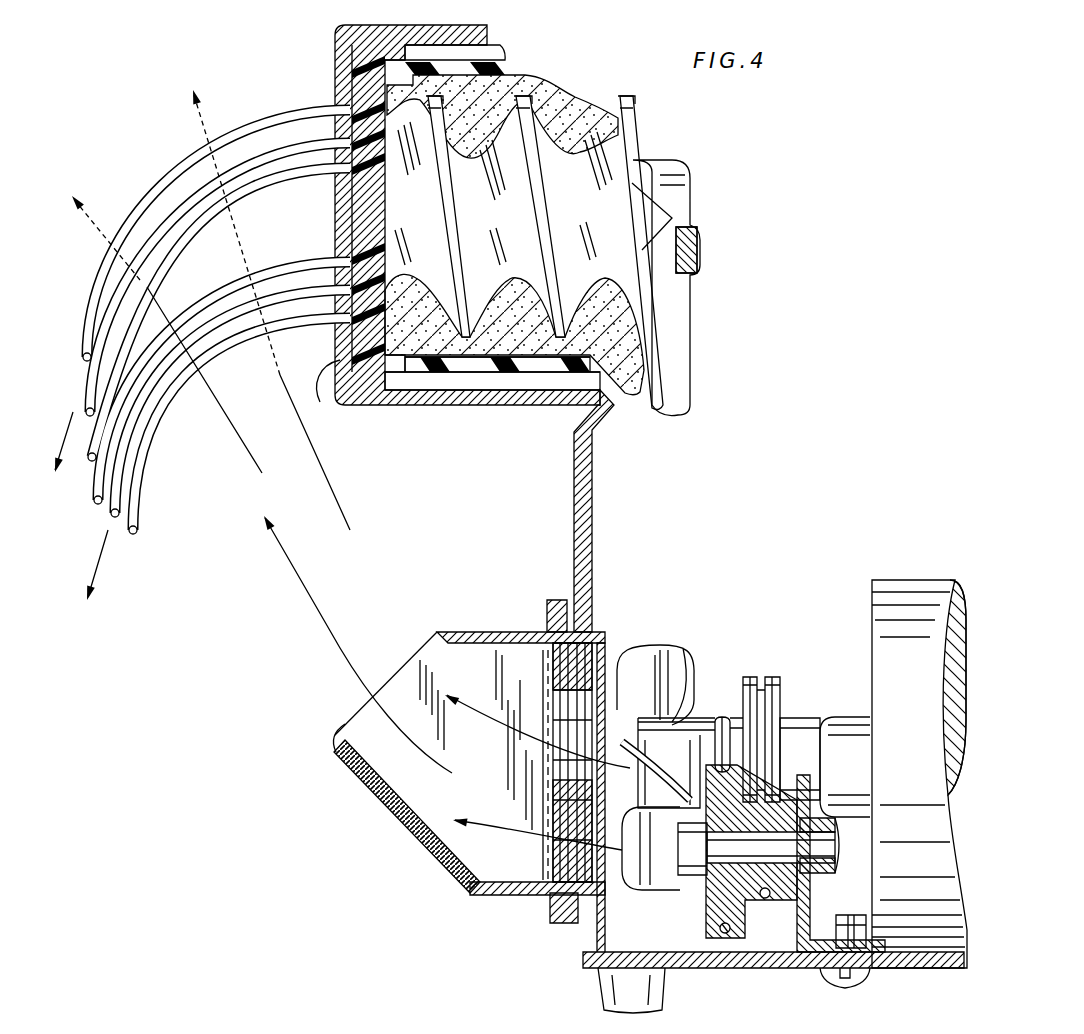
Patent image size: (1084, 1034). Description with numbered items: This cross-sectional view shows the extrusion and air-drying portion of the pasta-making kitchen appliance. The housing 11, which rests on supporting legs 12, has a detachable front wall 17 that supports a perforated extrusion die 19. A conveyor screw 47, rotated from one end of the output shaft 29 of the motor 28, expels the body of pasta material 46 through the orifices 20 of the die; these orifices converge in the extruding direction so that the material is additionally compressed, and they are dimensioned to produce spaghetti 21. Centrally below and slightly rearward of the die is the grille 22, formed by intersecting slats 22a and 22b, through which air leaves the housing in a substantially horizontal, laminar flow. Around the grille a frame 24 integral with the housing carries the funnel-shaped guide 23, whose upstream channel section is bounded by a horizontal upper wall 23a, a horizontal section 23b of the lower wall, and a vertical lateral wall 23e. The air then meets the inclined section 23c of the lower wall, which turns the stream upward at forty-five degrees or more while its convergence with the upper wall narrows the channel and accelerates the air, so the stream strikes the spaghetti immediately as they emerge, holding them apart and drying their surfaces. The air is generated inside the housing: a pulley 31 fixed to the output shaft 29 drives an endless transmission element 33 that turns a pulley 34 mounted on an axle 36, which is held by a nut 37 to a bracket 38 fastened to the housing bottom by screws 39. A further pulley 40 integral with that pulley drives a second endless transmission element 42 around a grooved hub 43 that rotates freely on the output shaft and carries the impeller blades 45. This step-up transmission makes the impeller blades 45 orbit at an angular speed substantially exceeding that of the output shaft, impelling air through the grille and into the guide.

The housing 11 is at (580, 524).
The legs 12 is at (650, 996).
The front wall 17 is at (350, 26).
The extrusion die 19 is at (331, 394).
The orifices 20 is at (343, 95).
The spaghetti 21 is at (137, 516).
The grille 22 is at (570, 783).
The slats 22a is at (580, 663).
The slats 22b is at (598, 831).
The guide 23 is at (455, 871).
The upper wall 23a is at (488, 616).
The horizontal section of lower wall 23b is at (508, 892).
The inclined section of lower wall 23c is at (385, 798).
The lateral wall 23e is at (333, 733).
The frame 24 is at (573, 922).
The motor 28 is at (890, 580).
The output shaft 29 is at (838, 738).
The pulley 31 is at (798, 718).
The endless transmission element 33 is at (765, 678).
The pulley 34 is at (790, 898).
The axle 36 is at (690, 860).
The nut 37 is at (828, 828).
The bracket 38 is at (808, 896).
The screws 39 is at (838, 983).
The pulley 40 is at (705, 918).
The endless transmission element 42 is at (720, 716).
The hub 43 is at (640, 731).
The impeller blades 45 is at (680, 658).
The pasta material 46 is at (518, 353).
The conveyor screw 47 is at (573, 98).